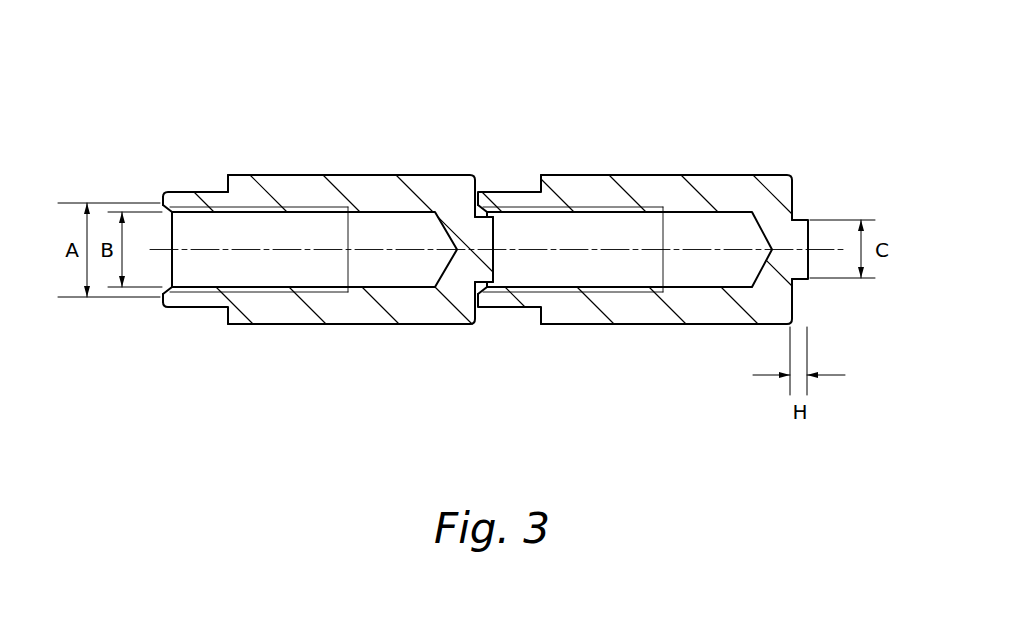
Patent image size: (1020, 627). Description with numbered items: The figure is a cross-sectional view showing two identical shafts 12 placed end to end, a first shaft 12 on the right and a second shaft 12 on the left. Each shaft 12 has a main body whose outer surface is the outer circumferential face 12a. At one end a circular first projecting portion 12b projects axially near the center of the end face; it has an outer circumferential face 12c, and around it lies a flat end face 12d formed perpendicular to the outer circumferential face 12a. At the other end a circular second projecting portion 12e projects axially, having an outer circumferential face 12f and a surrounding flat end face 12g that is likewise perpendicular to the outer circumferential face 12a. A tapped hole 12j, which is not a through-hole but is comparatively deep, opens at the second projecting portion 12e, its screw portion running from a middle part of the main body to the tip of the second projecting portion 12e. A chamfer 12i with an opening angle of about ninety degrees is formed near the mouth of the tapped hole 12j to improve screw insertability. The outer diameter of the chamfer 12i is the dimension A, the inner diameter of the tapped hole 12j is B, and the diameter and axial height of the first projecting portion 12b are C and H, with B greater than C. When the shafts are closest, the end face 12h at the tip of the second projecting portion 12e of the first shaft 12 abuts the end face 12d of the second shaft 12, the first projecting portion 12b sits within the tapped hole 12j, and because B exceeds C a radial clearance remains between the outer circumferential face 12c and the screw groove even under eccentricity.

The shaft 12 is at (350, 126).
The outer circumferential face 12a is at (342, 175).
The first projecting portion 12b is at (512, 212).
The outer circumferential face 12c is at (483, 292).
The end face 12d is at (494, 224).
The second projecting portion 12e is at (193, 190).
The outer circumferential face 12f is at (190, 310).
The end face 12g is at (227, 183).
The end face 12h is at (163, 302).
The chamfer 12i is at (162, 205).
The tapped hole 12j is at (270, 274).